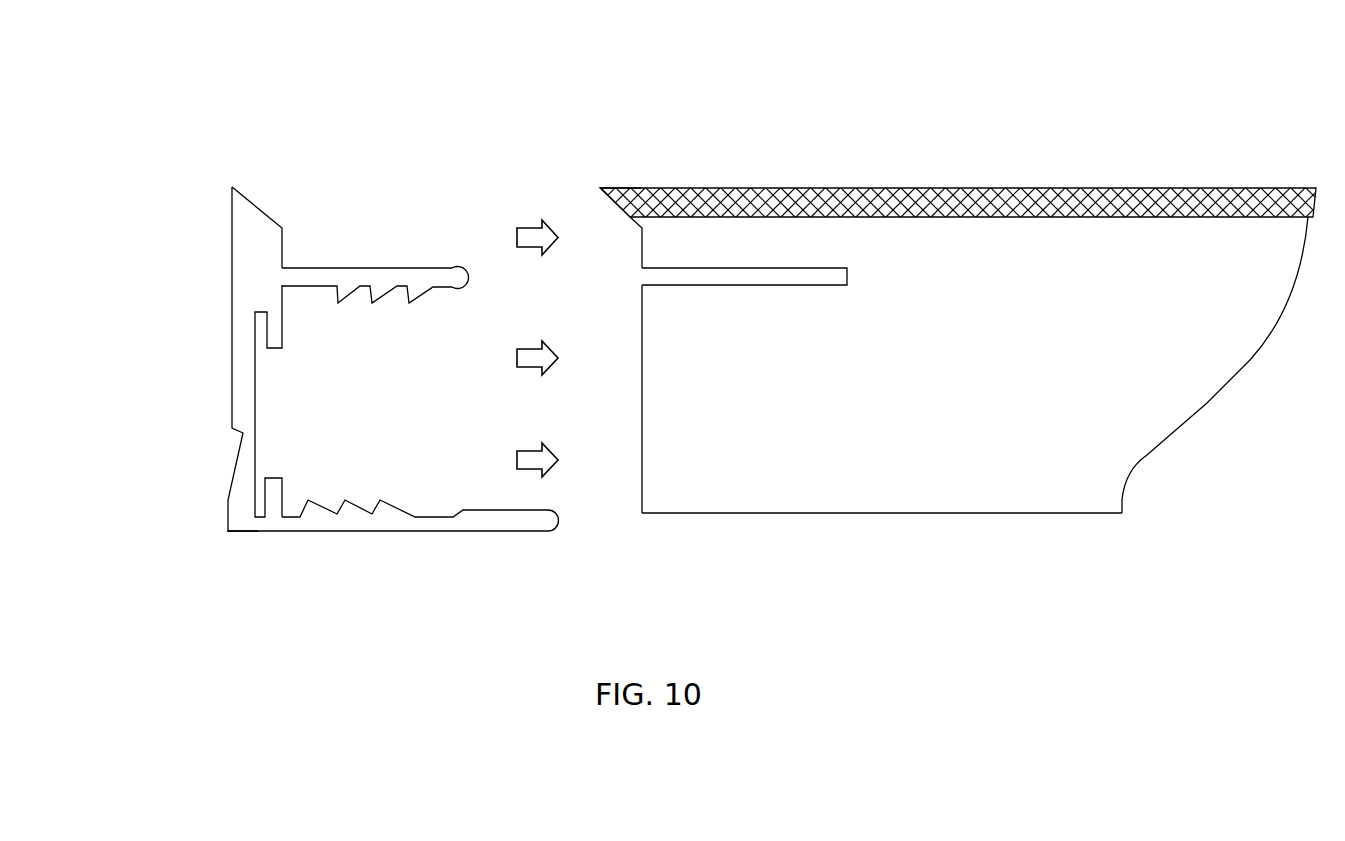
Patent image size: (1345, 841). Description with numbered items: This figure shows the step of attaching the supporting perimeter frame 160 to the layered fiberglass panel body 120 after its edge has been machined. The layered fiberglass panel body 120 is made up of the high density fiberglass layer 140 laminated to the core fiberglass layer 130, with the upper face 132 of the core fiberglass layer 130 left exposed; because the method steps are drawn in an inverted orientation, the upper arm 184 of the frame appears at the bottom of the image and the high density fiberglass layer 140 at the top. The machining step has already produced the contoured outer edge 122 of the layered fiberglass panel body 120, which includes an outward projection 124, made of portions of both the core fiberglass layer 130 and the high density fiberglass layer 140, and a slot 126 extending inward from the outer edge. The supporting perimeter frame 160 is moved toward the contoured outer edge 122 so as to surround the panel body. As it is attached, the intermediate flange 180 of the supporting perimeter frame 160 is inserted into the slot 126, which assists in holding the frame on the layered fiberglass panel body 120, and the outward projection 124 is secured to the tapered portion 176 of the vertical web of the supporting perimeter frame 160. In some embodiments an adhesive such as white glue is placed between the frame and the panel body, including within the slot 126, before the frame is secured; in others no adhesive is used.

The layered fiberglass panel body 120 is at (905, 351).
The contoured outer edge 122 is at (640, 412).
The outward projection 124 is at (600, 174).
The slot 126 is at (635, 278).
The core fiberglass layer 130 is at (785, 485).
The upper face of core fiberglass layer 132 is at (688, 513).
The high density fiberglass layer 140 is at (730, 200).
The supporting perimeter frame 160 is at (356, 332).
The tapered portion 176 is at (218, 188).
The intermediate flange 180 is at (347, 280).
The upper arm 184 is at (398, 523).